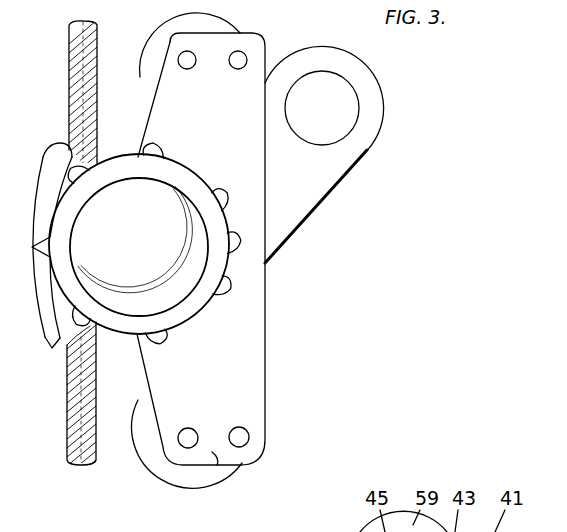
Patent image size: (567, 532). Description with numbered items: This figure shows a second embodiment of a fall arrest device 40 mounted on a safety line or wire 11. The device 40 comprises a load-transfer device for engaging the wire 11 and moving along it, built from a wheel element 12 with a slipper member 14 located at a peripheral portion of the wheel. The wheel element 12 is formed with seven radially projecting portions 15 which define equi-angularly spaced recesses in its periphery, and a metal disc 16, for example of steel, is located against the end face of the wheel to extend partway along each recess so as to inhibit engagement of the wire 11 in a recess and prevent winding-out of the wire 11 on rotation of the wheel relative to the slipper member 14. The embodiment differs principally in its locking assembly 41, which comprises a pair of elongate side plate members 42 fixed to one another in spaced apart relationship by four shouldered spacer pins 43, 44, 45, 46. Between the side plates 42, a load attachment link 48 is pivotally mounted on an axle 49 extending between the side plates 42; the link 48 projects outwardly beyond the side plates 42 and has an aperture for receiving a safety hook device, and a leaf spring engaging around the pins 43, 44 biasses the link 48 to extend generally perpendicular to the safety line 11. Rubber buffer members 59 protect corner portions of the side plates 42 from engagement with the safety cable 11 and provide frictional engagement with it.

The wire 11 is at (78, 43).
The wheel element 12 is at (55, 183).
The slipper member 14 is at (50, 339).
The radially projecting portions 15 is at (166, 339).
The metal disc 16 is at (122, 334).
The fall arrest device 40 is at (129, 486).
The locking assembly 41 is at (258, 479).
The side plate members 42 is at (216, 466).
The shouldered spacer pin 43 is at (243, 55).
The shouldered spacer pin 44 is at (242, 437).
The shouldered spacer pin 45 is at (180, 57).
The shouldered spacer pin 46 is at (188, 447).
The load attachment link 48 is at (340, 160).
The axle 49 is at (238, 249).
The rubber buffer members 59 is at (152, 80).